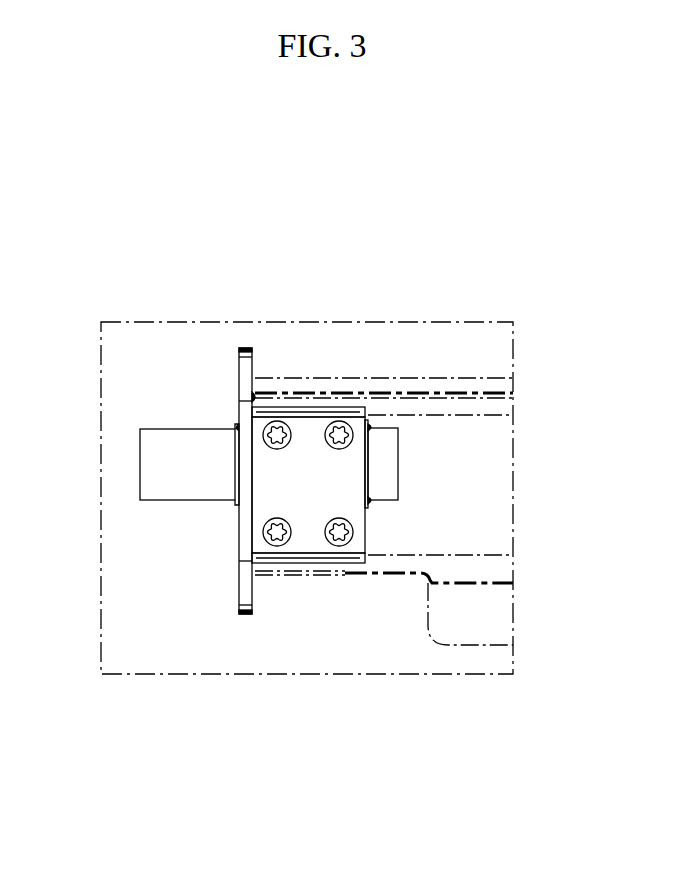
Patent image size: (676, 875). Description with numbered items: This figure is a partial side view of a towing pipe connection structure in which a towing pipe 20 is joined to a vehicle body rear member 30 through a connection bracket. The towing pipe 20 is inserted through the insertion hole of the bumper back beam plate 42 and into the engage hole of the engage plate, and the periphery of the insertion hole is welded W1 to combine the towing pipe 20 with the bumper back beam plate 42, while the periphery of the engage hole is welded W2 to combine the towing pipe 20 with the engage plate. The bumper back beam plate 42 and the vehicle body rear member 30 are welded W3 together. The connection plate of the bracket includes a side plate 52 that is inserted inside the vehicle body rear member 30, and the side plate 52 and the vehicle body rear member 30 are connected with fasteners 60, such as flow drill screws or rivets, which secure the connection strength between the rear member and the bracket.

The towing pipe 20 is at (130, 440).
The vehicle body rear member 30 is at (426, 378).
The bumper back beam plate 42 is at (243, 596).
The side plate 52 is at (340, 470).
The fastener 60 is at (338, 532).
The weld W1 is at (236, 426).
The weld W2 is at (372, 500).
The weld W3 is at (256, 396).